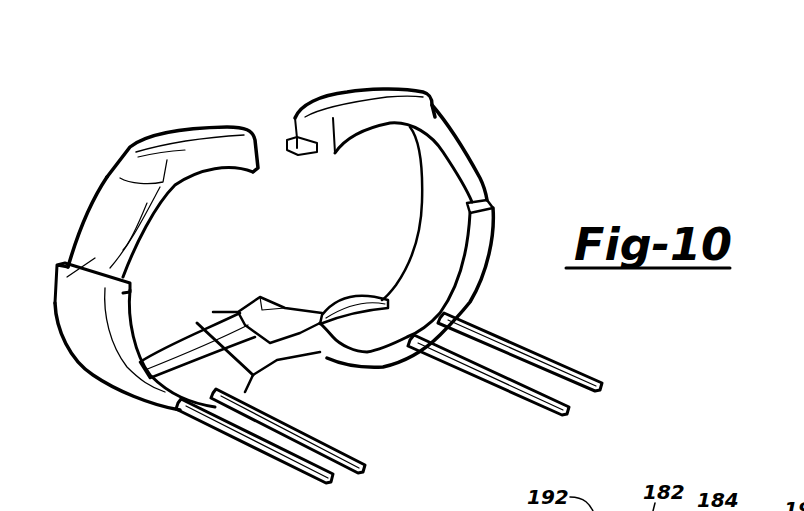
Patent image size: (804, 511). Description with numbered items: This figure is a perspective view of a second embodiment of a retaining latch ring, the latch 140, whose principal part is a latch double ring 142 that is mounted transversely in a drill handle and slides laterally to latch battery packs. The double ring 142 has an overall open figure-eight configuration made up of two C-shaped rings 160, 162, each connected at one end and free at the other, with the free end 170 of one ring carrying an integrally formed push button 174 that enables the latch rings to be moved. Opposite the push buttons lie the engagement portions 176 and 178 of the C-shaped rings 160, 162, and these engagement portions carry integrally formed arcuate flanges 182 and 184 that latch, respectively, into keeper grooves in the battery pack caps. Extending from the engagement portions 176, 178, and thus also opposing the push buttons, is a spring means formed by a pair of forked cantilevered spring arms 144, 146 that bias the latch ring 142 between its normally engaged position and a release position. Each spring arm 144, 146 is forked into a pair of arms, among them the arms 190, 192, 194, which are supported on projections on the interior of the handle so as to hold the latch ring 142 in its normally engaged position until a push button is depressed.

The latch 140 is at (449, 189).
The latch double ring 142 is at (145, 236).
The spring arm 144 is at (557, 392).
The spring arm 146 is at (276, 449).
The ring 160 is at (478, 190).
The ring 162 is at (55, 303).
The free end 170 is at (358, 105).
The push button 174 is at (183, 137).
The engagement portion 176 is at (420, 307).
The engagement portion 178 is at (260, 372).
The arcuate flange 182 is at (343, 304).
The arcuate flange 184 is at (182, 340).
The arm 190 is at (604, 388).
The arm 192 is at (571, 413).
The arm 194 is at (365, 471).